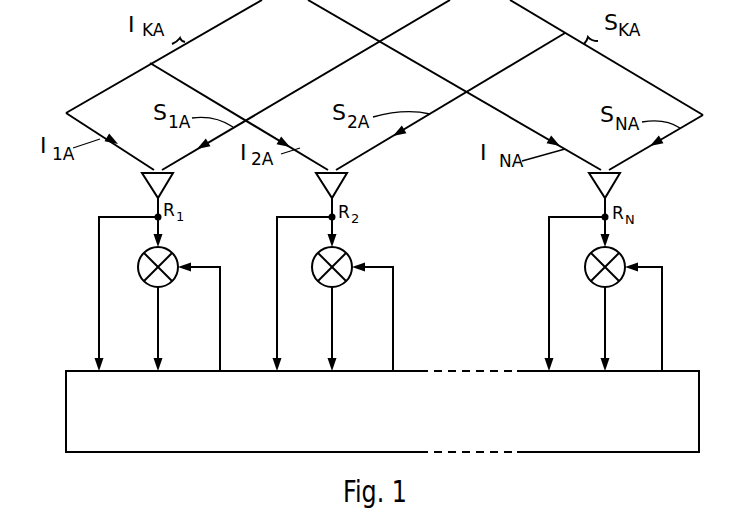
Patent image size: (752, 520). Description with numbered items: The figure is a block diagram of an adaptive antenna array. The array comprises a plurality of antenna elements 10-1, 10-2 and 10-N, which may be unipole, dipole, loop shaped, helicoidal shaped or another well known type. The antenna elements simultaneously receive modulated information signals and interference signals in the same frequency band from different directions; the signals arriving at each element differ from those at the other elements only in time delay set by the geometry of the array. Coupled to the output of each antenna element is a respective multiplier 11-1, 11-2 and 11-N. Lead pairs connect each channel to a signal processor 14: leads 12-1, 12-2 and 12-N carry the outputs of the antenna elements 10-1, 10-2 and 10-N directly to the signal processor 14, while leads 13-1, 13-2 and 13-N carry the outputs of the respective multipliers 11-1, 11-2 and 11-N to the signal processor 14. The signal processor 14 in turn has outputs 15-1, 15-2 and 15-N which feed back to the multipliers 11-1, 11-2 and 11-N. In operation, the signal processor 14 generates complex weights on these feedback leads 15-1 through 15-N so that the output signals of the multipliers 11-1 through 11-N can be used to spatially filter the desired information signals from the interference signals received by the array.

The antenna element 10-1 is at (142, 188).
The antenna element 10-2 is at (322, 188).
The antenna element 10-N is at (592, 190).
The multiplier 11-1 is at (172, 253).
The multiplier 11-2 is at (348, 254).
The multiplier 11-N is at (620, 257).
The lead 12-1 is at (98, 276).
The lead 12-2 is at (276, 286).
The lead 12-N is at (548, 286).
The lead 13-1 is at (155, 294).
The lead 13-2 is at (330, 302).
The lead 13-N is at (603, 303).
The output lead 15-1 is at (218, 315).
The output lead 15-2 is at (391, 314).
The output lead 15-N is at (661, 315).
The signal processor 14 is at (183, 453).